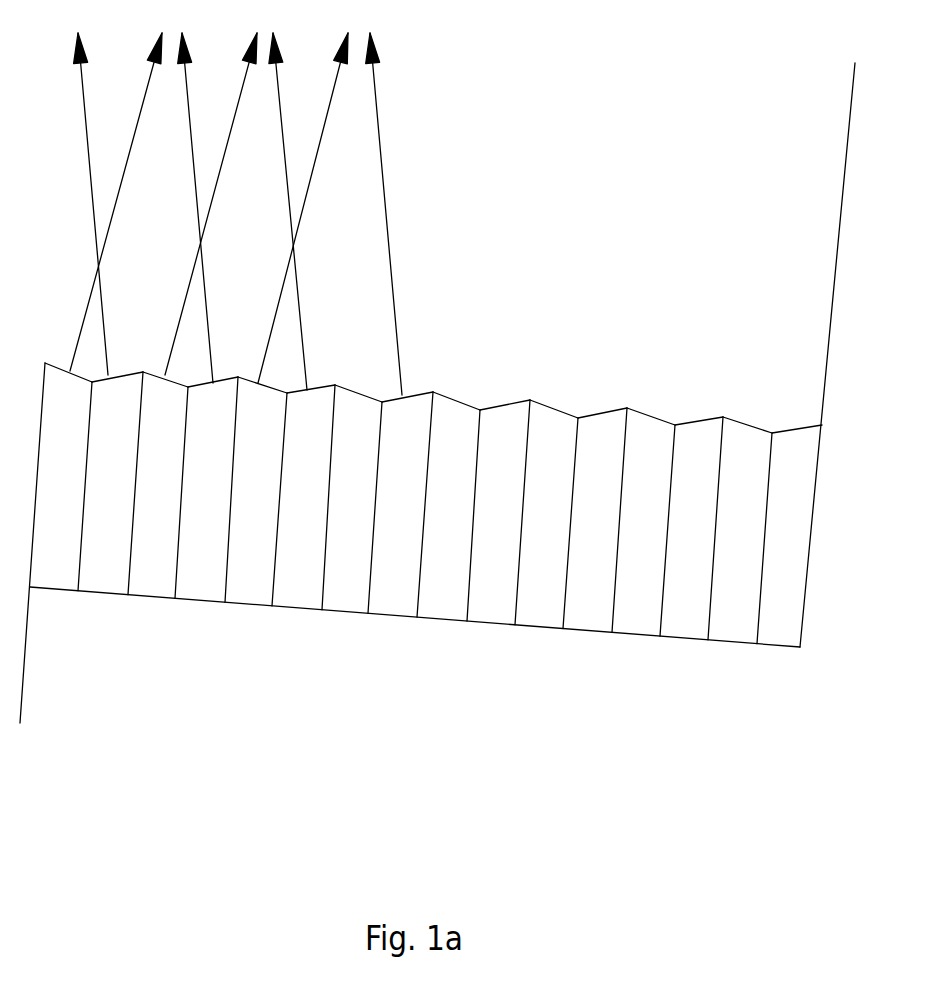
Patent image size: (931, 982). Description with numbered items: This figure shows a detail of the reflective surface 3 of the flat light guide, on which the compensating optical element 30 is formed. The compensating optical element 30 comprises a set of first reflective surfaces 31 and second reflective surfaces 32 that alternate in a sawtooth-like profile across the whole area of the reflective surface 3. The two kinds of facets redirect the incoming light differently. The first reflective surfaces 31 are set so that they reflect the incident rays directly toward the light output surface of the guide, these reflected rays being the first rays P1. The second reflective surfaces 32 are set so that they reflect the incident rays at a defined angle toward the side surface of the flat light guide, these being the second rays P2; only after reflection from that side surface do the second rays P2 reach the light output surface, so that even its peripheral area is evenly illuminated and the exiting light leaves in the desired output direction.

The reflective surface 3 is at (448, 437).
The compensating optical element 30 is at (448, 437).
The first reflective surfaces 31 is at (205, 545).
The second reflective surfaces 32 is at (248, 530).
The first rays P1 is at (206, 305).
The second rays P2 is at (150, 77).